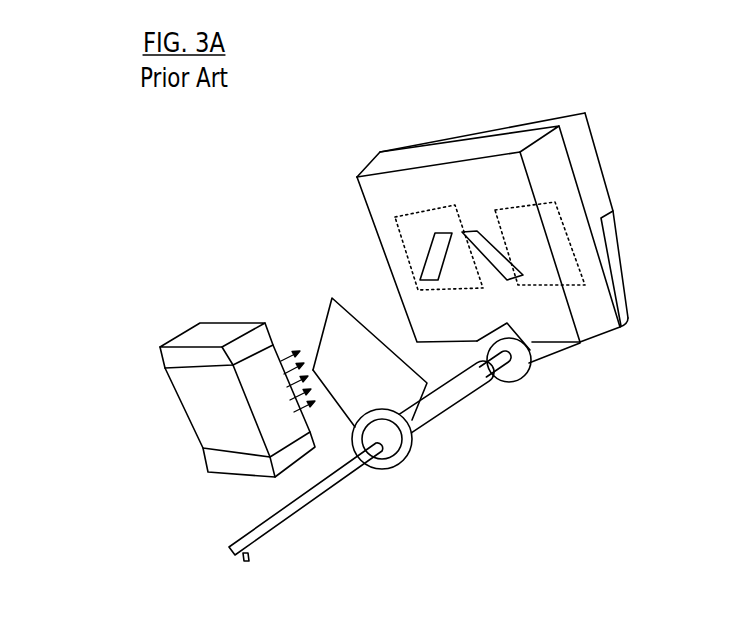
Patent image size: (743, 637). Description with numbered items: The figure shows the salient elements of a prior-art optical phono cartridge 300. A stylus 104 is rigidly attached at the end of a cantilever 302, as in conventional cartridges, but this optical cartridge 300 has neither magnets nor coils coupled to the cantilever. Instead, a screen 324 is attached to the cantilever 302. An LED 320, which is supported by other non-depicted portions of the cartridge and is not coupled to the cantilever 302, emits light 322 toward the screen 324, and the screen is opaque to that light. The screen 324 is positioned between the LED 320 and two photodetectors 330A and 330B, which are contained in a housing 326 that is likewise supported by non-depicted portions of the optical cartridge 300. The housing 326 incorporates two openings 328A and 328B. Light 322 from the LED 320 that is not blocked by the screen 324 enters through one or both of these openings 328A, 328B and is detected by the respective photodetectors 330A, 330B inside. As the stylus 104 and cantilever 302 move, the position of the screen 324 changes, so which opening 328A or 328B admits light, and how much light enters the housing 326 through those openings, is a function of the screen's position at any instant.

The optical cartridge 300 is at (213, 226).
The housing 326 is at (452, 152).
The opening 328A is at (430, 246).
The opening 328B is at (477, 230).
The photodetector 330A is at (395, 228).
The photodetector 330B is at (562, 222).
The screen 324 is at (377, 388).
The light 322 is at (293, 343).
The LED light source 320 is at (207, 408).
The cantilever 302 is at (318, 488).
The stylus 104 is at (255, 553).